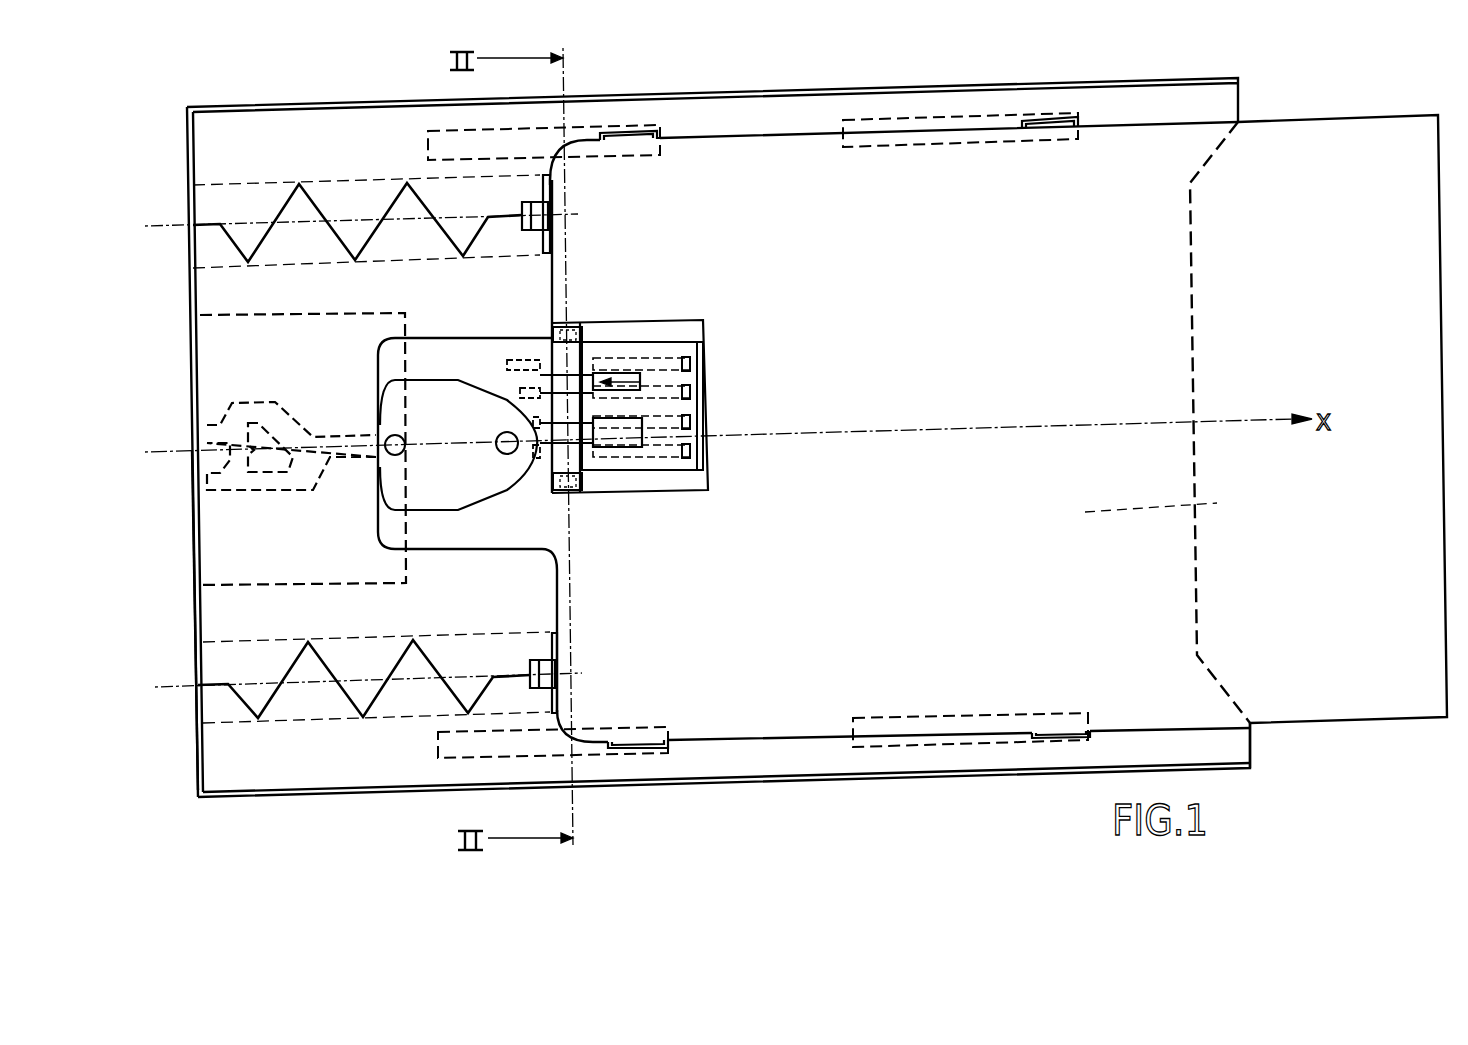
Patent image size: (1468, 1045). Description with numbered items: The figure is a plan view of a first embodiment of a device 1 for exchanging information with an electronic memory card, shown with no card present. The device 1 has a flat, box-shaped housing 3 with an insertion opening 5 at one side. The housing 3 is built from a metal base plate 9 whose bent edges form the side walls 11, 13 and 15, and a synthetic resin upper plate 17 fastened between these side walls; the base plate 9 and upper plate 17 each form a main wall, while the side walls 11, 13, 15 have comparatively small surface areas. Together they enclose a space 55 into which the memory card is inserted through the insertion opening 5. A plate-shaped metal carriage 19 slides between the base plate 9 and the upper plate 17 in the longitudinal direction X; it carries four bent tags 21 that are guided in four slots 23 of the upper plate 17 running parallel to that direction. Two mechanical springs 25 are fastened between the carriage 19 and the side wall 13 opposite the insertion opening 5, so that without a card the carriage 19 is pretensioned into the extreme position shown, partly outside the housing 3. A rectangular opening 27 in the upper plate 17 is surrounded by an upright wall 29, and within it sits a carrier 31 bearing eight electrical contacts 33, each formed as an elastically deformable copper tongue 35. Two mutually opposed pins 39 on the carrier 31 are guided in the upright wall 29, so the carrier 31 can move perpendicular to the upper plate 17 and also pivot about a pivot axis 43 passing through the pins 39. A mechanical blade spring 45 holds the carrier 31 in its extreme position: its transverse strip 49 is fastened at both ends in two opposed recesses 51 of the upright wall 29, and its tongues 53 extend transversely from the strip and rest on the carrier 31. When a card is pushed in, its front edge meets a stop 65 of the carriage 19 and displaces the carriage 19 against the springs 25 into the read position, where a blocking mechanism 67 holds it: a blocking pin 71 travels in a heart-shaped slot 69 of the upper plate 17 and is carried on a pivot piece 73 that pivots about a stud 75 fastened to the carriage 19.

The device 1 is at (260, 797).
The housing 3 is at (207, 104).
The insertion opening 5 is at (1190, 203).
The metal base plate 9 is at (1235, 747).
The side wall 11 is at (778, 782).
The side wall 13 is at (193, 498).
The side wall 15 is at (735, 92).
The synthetic resin upper plate 17 is at (370, 758).
The carriage 19 is at (1362, 702).
The bent tags 21 is at (633, 132).
The slots 23 is at (430, 128).
The mechanical springs 25 is at (228, 240).
The rectangular opening 27 is at (707, 453).
The upright wall 29 is at (675, 328).
The carrier 31 is at (612, 350).
The electrical contacts 33 is at (672, 412).
The copper tongue 35 is at (647, 455).
The pins 39 is at (552, 332).
The pivot axis 43 is at (576, 566).
The mechanical blade spring 45 is at (643, 377).
The transverse strip 49 is at (585, 460).
The recesses 51 is at (572, 325).
The tongues 53 is at (690, 423).
The space 55 is at (1165, 507).
The stop 65 is at (558, 186).
The blocking mechanism 67 is at (295, 362).
The heart-shaped slot 69 is at (288, 432).
The blocking pin 71 is at (388, 465).
The pivot piece 73 is at (395, 395).
The stud 75 is at (503, 449).